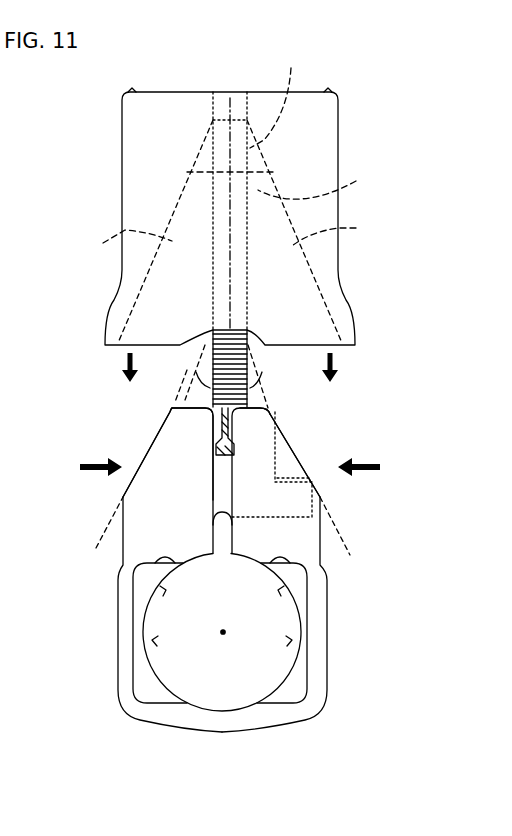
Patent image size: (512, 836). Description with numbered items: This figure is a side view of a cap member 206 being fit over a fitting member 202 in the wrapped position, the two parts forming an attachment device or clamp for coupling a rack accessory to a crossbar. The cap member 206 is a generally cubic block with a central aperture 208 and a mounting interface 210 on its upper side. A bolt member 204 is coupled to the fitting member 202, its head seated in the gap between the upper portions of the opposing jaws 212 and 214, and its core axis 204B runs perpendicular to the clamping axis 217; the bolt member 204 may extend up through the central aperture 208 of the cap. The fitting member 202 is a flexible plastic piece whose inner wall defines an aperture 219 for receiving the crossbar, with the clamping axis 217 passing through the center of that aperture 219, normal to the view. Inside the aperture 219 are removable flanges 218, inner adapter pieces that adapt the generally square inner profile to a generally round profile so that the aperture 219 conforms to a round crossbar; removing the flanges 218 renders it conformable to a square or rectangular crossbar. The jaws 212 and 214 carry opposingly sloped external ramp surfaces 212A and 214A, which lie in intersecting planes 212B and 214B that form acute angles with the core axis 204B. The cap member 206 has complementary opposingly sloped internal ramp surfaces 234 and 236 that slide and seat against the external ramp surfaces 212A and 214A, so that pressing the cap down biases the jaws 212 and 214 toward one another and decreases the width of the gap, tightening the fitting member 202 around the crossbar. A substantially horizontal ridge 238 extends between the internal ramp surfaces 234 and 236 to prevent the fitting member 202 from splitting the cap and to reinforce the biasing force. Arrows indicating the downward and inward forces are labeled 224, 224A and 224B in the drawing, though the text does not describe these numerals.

The fitting member 202 is at (140, 752).
The bolt member 204 is at (212, 215).
The core axis 204B is at (286, 97).
The cap member 206 is at (62, 212).
The central aperture 208 is at (235, 89).
The mounting interface 210 is at (182, 89).
The jaw 212 is at (118, 621).
The external ramp surface 212A is at (142, 456).
The plane 212B is at (172, 402).
The jaw 214 is at (328, 598).
The external ramp surface 214A is at (310, 456).
The plane 214B is at (277, 408).
The clamping axis 217 is at (226, 628).
The removable flanges 218 is at (152, 672).
The aperture 219 is at (215, 687).
The clamping force 224 is at (61, 452).
The first clamping force 224A is at (190, 471).
The second clamping force 224B is at (61, 532).
The internal ramp surface 234 is at (122, 242).
The internal ramp surface 236 is at (339, 232).
The ridge 238 is at (328, 184).